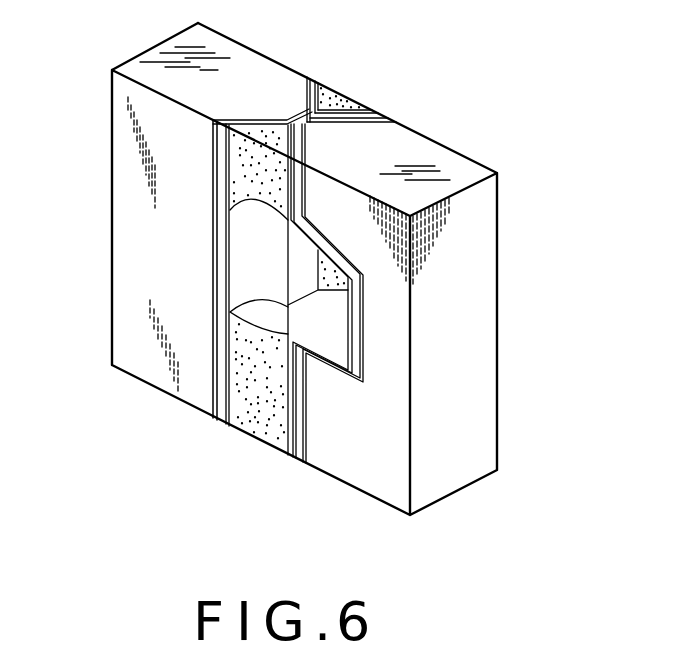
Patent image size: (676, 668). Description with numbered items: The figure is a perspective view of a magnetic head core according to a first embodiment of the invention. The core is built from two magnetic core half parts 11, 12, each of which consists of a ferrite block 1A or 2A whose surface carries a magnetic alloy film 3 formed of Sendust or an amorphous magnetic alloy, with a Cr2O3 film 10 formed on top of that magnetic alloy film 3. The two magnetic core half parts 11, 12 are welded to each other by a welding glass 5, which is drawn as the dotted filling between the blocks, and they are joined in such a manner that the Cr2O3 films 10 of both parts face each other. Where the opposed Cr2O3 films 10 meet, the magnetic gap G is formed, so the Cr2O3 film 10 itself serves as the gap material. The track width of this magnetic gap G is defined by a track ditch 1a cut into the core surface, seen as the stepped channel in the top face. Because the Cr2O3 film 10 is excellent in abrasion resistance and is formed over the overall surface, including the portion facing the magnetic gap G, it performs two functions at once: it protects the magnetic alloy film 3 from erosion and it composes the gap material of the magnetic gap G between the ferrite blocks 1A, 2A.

The magnetic core half part 11 is at (107, 193).
The magnetic core half part 12 is at (485, 152).
The ferrite block 1A is at (153, 374).
The ferrite block 2A is at (483, 425).
The track ditch 1a is at (304, 95).
The magnetic alloy film 3 is at (307, 76).
The Cr2O3 film 10 is at (318, 78).
The welding glass 5 is at (238, 181).
The magnetic gap G is at (314, 124).